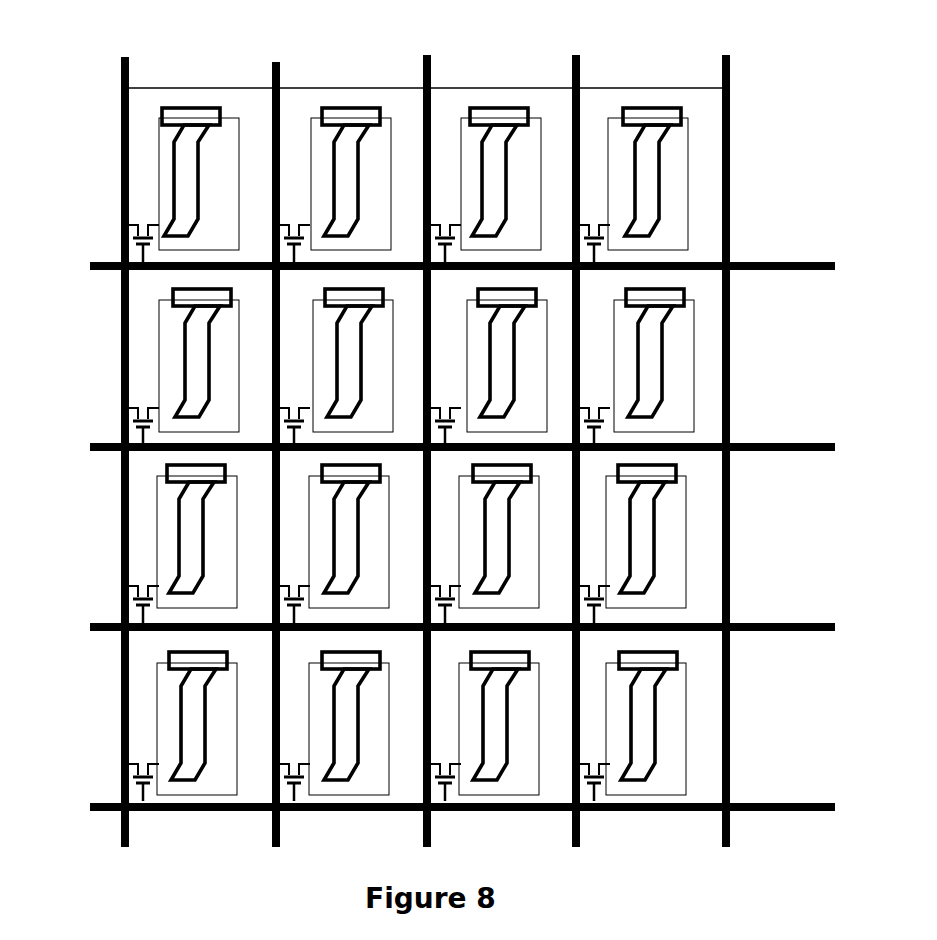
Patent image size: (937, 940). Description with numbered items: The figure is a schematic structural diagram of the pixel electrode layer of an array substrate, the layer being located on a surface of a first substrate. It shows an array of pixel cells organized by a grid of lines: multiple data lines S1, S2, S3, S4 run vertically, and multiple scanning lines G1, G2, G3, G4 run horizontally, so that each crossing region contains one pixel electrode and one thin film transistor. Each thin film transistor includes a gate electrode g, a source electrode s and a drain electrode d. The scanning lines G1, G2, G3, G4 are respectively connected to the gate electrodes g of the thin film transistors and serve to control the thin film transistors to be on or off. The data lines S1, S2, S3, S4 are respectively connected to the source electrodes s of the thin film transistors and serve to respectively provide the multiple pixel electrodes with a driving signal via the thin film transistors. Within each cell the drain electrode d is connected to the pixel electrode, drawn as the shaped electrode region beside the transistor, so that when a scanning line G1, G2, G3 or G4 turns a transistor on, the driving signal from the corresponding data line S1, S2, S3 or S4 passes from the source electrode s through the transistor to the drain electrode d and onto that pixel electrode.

The data line S1 is at (133, 426).
The data line S2 is at (290, 426).
The data line S3 is at (423, 425).
The data line S4 is at (571, 425).
The scanning line G1 is at (431, 266).
The scanning line G2 is at (431, 444).
The scanning line G3 is at (431, 626).
The scanning line G4 is at (431, 804).
The source electrode s is at (121, 218).
The drain electrode d is at (162, 218).
The gate electrode g is at (144, 269).